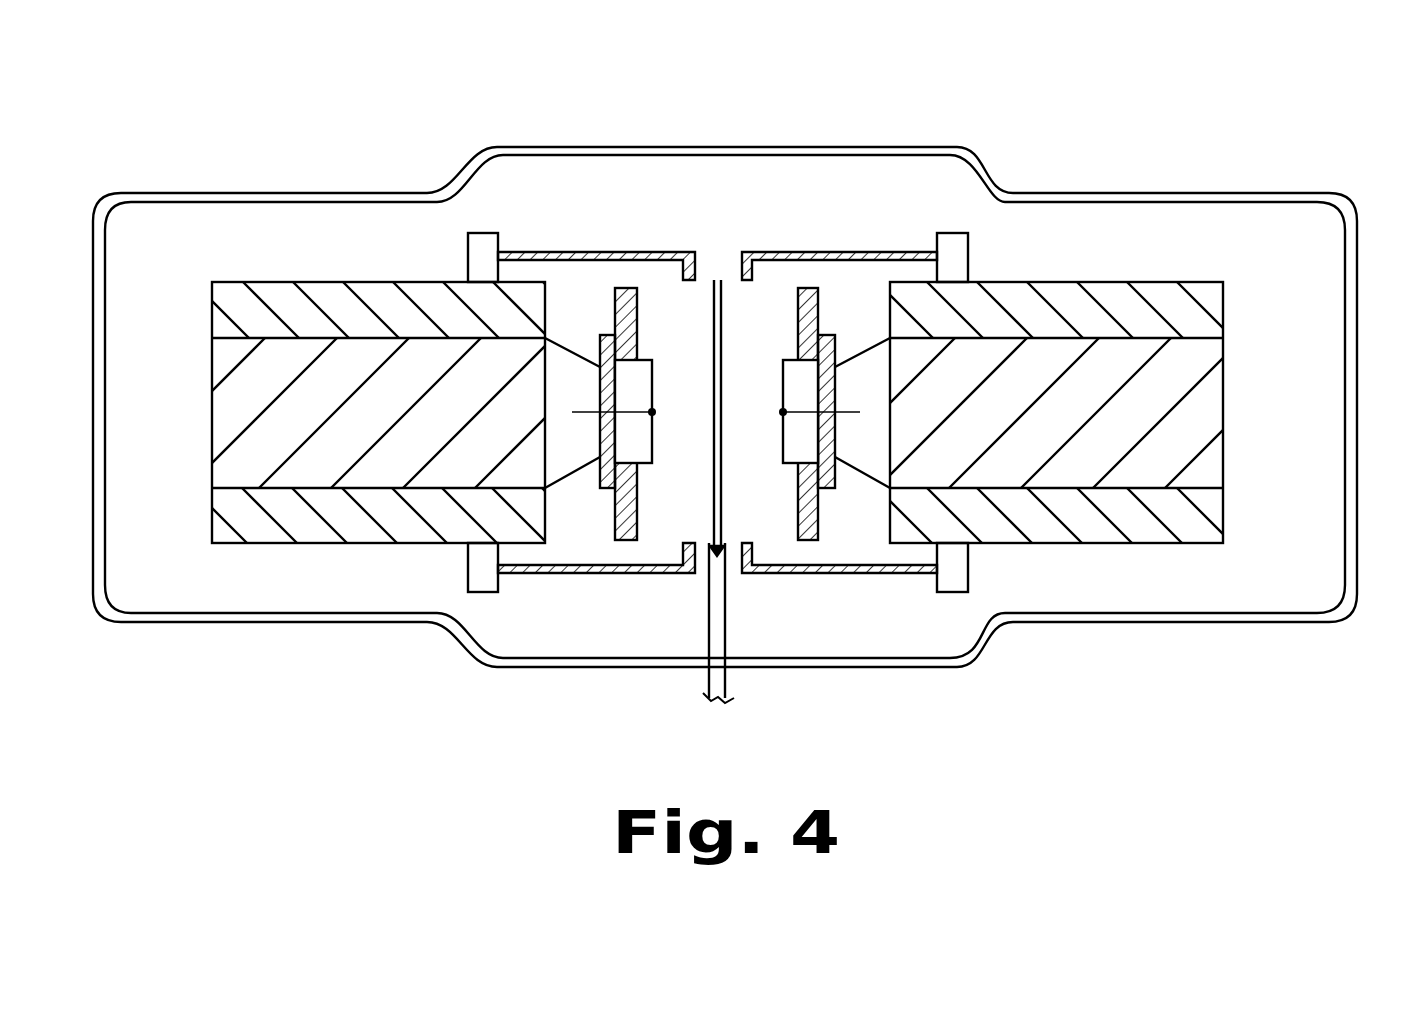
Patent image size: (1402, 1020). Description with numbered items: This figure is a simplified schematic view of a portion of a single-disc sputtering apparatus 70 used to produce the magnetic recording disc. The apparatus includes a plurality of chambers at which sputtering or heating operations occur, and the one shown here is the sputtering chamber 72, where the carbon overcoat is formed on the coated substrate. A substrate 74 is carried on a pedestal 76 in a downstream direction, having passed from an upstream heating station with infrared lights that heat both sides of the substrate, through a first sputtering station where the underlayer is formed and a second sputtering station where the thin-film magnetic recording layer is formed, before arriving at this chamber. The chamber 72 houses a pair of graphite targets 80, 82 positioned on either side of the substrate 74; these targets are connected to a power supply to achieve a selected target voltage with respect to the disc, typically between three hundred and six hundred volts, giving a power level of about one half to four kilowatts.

The single-disc sputtering apparatus 70 is at (415, 137).
The sputtering chamber 72 is at (714, 221).
The substrate 74 is at (720, 378).
The pedestal 76 is at (709, 603).
The graphite target 80 is at (807, 287).
The graphite target 82 is at (619, 290).